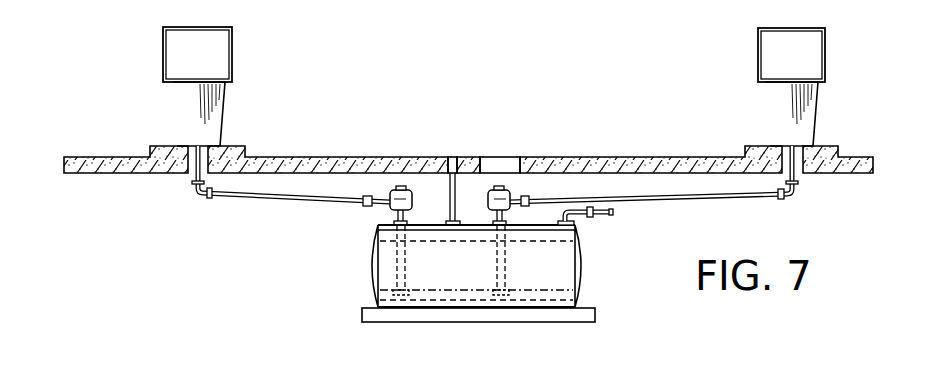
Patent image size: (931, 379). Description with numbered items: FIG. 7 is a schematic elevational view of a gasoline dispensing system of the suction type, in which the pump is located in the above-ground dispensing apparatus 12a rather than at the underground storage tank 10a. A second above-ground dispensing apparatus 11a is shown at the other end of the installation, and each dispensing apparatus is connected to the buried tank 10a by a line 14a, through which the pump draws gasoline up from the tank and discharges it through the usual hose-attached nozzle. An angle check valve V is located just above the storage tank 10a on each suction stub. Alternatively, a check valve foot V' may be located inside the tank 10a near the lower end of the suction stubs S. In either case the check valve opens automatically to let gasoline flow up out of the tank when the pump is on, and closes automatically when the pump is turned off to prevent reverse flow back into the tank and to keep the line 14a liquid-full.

The above-ground dispensing apparatus 12a is at (217, 117).
The fuel dispensing pump 11a is at (812, 108).
The line 14a is at (262, 198).
The underground storage tank 10a is at (585, 280).
The angle check valve V is at (450, 202).
The check valve foot V' is at (411, 318).
The sensor / suction tube S is at (405, 252).